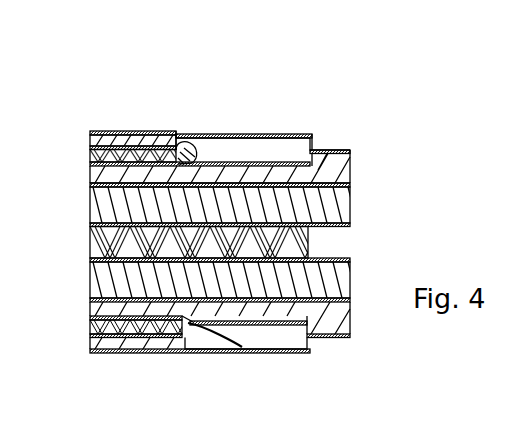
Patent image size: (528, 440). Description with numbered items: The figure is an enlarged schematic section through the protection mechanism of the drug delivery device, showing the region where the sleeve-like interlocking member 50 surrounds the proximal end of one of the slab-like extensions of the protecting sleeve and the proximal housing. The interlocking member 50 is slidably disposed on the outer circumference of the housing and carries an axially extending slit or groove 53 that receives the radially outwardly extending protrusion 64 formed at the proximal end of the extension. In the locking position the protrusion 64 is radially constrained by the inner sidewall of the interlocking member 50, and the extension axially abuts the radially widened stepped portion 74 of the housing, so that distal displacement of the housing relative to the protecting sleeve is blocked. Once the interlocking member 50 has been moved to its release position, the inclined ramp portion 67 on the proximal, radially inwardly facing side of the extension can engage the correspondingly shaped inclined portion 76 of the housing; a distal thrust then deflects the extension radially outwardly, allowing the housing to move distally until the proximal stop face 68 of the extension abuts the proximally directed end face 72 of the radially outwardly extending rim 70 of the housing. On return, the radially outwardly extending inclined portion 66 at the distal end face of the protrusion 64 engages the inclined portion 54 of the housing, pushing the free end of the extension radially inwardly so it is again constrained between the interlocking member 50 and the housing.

The interlocking member 50 is at (113, 131).
The axially extending slit or groove 53 is at (272, 137).
The inclined portion of the housing 54 is at (165, 132).
The radially outwardly extending protrusion 64 is at (182, 325).
The radially outwardly extending inclined portion 66 is at (176, 136).
The inclined ramp portion 67 is at (193, 142).
The proximal stop face 68 is at (242, 347).
The radially outwardly extending rim 70 is at (343, 152).
The proximally-directed end face 72 is at (308, 156).
The radially widened stepped portion 74 is at (219, 166).
The inclined portion of the housing 76 is at (227, 327).